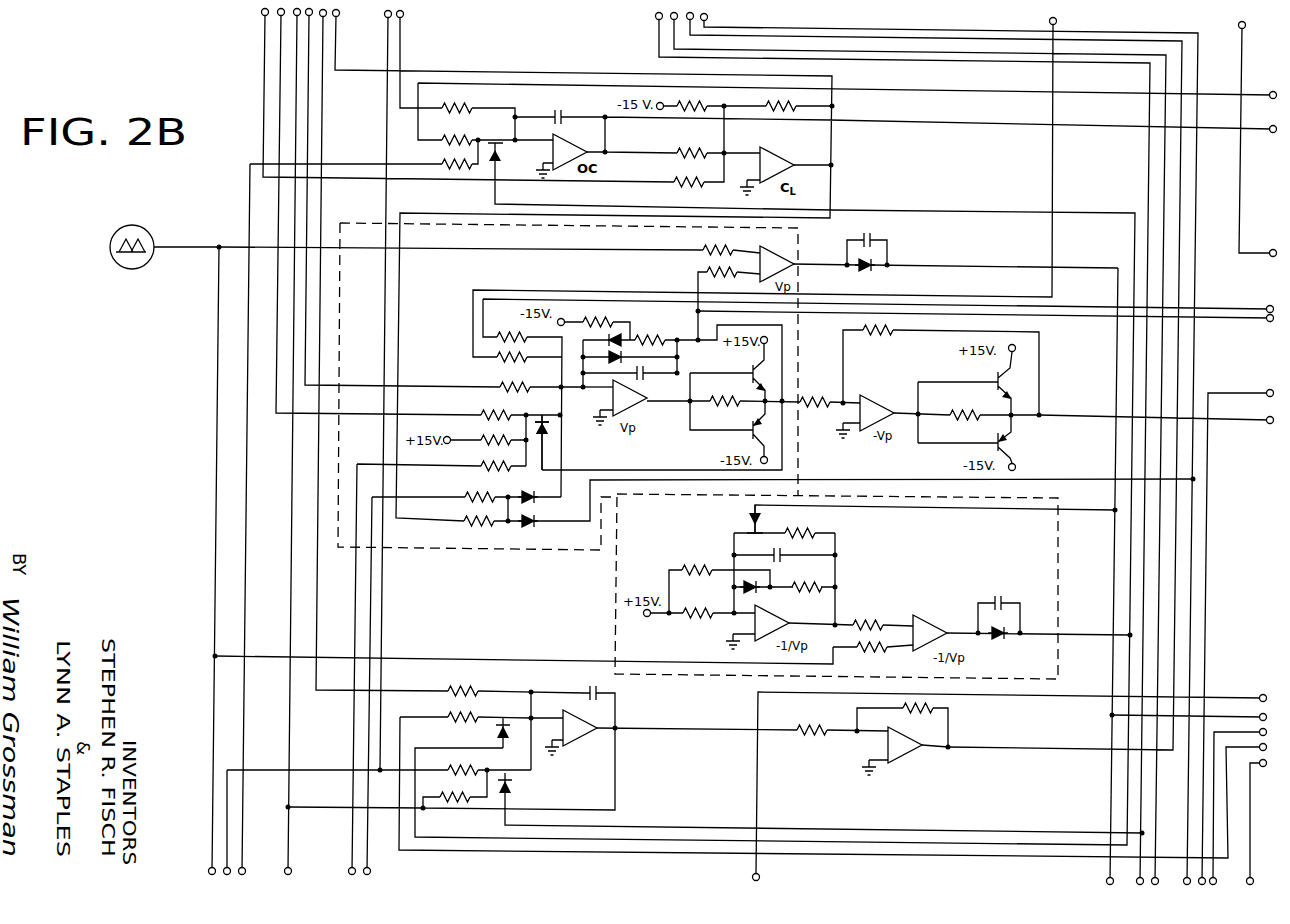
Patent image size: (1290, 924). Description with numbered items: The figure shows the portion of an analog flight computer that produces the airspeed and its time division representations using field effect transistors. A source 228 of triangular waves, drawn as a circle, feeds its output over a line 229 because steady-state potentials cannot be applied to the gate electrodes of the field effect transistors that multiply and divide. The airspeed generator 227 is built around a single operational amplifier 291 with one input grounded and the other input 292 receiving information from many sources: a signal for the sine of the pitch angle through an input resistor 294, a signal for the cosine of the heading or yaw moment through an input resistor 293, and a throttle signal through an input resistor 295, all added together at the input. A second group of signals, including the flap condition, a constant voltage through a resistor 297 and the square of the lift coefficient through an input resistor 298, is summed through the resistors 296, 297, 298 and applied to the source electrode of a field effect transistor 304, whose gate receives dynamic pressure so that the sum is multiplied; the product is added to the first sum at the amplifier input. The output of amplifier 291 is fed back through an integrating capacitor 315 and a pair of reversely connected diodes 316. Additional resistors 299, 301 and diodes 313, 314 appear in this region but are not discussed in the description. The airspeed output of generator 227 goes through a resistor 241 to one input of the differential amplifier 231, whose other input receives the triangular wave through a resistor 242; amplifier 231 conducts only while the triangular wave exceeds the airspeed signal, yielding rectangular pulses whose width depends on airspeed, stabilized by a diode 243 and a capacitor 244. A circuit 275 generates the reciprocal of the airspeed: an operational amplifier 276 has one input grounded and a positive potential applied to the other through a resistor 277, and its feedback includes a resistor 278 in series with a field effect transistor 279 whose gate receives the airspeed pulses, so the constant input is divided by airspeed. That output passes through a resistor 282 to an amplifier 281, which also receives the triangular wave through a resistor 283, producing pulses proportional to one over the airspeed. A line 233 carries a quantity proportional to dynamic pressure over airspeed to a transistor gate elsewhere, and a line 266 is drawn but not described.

The airspeed generator 227 is at (786, 352).
The source of triangular waves 228 is at (124, 266).
The line 229 is at (238, 243).
The operational amplifier 231 is at (775, 252).
The line 233 is at (657, 46).
The resistor 241 is at (703, 272).
The resistor 242 is at (701, 250).
The diode 243 is at (872, 276).
The capacitor 244 is at (875, 238).
The output line 266 is at (1110, 812).
The reciprocal of airspeed circuit 275 is at (614, 618).
The operational amplifier 276 is at (777, 624).
The resistor 277 is at (704, 621).
The resistor 278 is at (809, 532).
The field effect transistor 279 is at (747, 523).
The amplifier 281 is at (934, 632).
The resistor 282 is at (873, 619).
The resistor 283 is at (876, 653).
The operational amplifier 291 is at (645, 400).
The input 292 is at (603, 390).
The input resistor 293 is at (521, 334).
The input resistor 294 is at (523, 356).
The input resistor 295 is at (498, 385).
The resistor 296 is at (478, 414).
The resistor 297 is at (486, 438).
The input resistor 298 is at (480, 465).
The resistor 299 is at (462, 496).
The resistor 301 is at (463, 520).
The field effect transistor 304 is at (542, 414).
The diode 313 is at (532, 494).
The diode 314 is at (542, 518).
The capacitor 315 is at (646, 378).
The pair of reversely connected diodes 316 is at (622, 356).